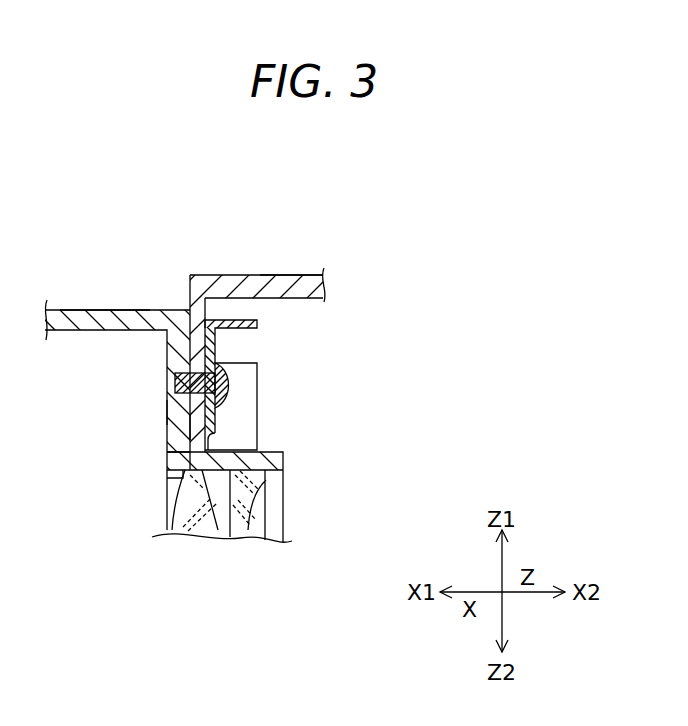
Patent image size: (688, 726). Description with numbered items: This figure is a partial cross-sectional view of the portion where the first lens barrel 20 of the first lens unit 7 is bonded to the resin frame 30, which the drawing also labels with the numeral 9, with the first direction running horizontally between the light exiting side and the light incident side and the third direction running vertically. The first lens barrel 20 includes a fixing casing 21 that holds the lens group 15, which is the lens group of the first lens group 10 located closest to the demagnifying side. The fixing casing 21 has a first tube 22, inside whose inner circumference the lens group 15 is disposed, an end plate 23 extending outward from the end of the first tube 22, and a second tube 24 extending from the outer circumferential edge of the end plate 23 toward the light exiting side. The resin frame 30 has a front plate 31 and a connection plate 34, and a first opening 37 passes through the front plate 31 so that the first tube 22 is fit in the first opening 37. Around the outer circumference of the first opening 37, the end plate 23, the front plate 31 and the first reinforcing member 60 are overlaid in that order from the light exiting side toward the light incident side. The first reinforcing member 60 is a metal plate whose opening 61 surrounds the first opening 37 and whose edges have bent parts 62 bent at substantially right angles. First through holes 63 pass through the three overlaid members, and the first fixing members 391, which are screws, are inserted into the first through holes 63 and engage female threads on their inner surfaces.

The resin frame 30 is at (204, 306).
The housing 9 is at (243, 275).
The fixing casing 21 is at (167, 361).
The first lens barrel 20 is at (167, 361).
The first lens unit 7 is at (116, 297).
The second tube 24 is at (92, 310).
The connection plate 34 is at (288, 275).
The bent parts 62 is at (257, 324).
The first through holes 63 is at (175, 383).
The first fixing members 391 is at (230, 388).
The first reinforcing member 60 is at (228, 419).
The opening 61 is at (212, 443).
The end plate 23 is at (172, 410).
The front plate 31 is at (190, 426).
The first opening 37 is at (190, 461).
The first tube 22 is at (247, 450).
The lens group 15 is at (165, 518).
The first lens group 10 is at (157, 507).